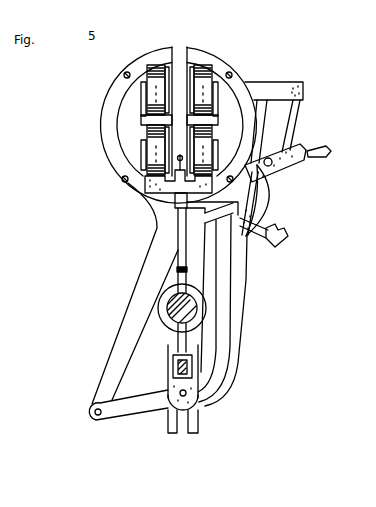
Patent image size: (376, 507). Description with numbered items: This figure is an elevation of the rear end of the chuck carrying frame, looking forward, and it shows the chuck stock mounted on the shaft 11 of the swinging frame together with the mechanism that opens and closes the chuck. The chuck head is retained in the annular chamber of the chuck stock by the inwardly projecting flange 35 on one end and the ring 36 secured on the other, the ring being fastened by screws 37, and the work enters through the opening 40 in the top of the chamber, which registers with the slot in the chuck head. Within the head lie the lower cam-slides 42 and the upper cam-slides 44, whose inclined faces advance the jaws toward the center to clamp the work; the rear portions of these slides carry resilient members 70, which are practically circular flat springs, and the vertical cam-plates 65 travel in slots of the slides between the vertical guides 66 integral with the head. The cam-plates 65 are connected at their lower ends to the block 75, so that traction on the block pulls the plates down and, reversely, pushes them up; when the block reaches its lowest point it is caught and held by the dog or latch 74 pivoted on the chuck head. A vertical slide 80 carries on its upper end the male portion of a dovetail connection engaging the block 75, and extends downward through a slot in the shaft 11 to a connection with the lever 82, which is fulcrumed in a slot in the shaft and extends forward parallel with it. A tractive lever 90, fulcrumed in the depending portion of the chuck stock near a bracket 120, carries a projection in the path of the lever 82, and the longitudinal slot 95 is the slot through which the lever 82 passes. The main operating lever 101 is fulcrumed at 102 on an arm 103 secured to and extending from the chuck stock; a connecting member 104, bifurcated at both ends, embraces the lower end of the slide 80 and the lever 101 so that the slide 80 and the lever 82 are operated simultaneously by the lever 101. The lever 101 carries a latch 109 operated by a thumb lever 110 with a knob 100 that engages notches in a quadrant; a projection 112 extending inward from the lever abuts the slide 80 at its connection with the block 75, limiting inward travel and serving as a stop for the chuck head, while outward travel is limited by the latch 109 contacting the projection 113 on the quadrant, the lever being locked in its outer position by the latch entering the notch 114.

The shaft 11 is at (170, 310).
The inwardly projecting flange 35 is at (180, 110).
The ring 36 is at (108, 128).
The screws 37 is at (125, 73).
The opening 40 is at (181, 50).
The cam-slides 42 is at (142, 157).
The cam-slides 44 is at (158, 70).
The vertical cam-plates 65 is at (150, 192).
The vertical guides 66 is at (166, 67).
The resilient members 70 is at (148, 68).
The dog or latch 74 is at (180, 154).
The block 75 is at (178, 181).
The vertical slide 80 is at (178, 243).
The lever 82 is at (196, 370).
The tractive lever 90 is at (298, 113).
The longitudinal slot 95 is at (182, 437).
The knob 100 is at (333, 149).
The main operating lever 101 is at (133, 423).
The fulcrum 102 is at (90, 413).
The arm 103 is at (127, 320).
The connecting member 104 is at (168, 385).
The latch 109 is at (256, 200).
The thumb lever 110 is at (300, 145).
The projection 112 is at (212, 223).
The projection 113 is at (289, 238).
The notch 114 is at (270, 235).
The bracket 120 is at (295, 84).